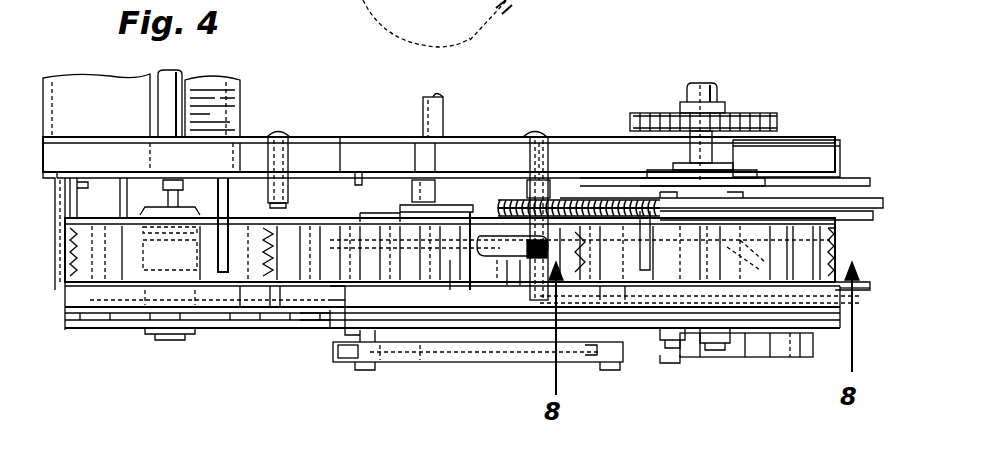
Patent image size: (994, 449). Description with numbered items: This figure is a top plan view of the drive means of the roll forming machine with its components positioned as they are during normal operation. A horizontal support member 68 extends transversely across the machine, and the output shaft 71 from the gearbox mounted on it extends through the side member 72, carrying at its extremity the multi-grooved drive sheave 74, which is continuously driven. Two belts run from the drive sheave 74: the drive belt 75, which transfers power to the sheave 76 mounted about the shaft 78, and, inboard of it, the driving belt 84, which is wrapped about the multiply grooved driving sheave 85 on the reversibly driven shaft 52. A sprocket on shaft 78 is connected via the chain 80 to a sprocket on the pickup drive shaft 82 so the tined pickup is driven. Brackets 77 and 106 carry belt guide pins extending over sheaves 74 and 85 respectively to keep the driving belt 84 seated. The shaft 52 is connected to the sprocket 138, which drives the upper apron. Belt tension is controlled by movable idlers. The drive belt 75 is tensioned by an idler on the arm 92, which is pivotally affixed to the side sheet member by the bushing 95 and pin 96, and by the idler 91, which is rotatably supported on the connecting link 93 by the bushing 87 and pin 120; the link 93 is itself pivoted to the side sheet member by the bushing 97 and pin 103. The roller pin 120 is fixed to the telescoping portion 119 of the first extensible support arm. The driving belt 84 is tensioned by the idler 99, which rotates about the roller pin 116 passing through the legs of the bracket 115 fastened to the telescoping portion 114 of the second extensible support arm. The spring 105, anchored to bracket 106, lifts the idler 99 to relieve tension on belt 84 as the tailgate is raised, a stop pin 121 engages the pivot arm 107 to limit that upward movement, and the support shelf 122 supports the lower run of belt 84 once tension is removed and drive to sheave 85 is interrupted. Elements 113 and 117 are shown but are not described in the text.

The reversibly driven shaft 52 is at (700, 85).
The horizontal support member 68 is at (82, 78).
The output shaft 71 is at (178, 70).
The side member 72 is at (250, 137).
The multi-grooved drive sheave 74 is at (100, 330).
The drive belt 75 is at (280, 330).
The sheave 76 is at (770, 340).
The bracket 77 is at (210, 290).
The shaft 78 is at (670, 363).
The chain 80 is at (345, 292).
The pickup drive shaft 82 is at (437, 97).
The driving belt 84 is at (326, 248).
The multiply grooved driving sheave 85 is at (842, 305).
The bushing 87 is at (345, 340).
The idler 91 is at (310, 330).
The arm 92 is at (497, 270).
The connecting link 93 is at (420, 363).
The bushing 95 is at (530, 161).
The pin 96 is at (548, 161).
The bushing 97 is at (590, 362).
The idler 99 is at (384, 262).
The pin 103 is at (615, 365).
The spring 105 is at (500, 200).
The bracket 106 is at (642, 160).
The pivot arm 107 is at (322, 172).
The post 113 is at (268, 196).
The telescoping portion 114 is at (507, 275).
The bracket 115 is at (450, 290).
The roller pin 116 is at (432, 165).
The nut 117 is at (284, 208).
The telescoping portion 119 is at (520, 270).
The roller pin 120 is at (363, 368).
The stop pin 121 is at (358, 186).
The support shelf 122 is at (55, 252).
The sprocket 138 is at (762, 113).